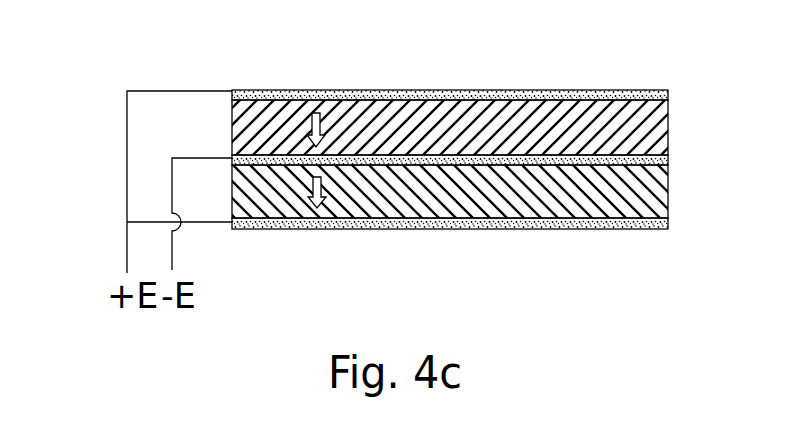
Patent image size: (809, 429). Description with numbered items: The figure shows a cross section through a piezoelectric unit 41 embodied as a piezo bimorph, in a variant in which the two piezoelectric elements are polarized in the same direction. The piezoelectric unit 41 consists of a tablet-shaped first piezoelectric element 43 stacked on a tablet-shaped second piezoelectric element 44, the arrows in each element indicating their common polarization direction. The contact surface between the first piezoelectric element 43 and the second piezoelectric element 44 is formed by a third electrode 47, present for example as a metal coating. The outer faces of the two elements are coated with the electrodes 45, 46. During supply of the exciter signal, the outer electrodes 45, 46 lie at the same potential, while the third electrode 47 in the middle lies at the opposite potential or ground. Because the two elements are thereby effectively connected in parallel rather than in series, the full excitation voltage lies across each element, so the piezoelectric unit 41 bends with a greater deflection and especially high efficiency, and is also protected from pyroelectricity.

The piezoelectric unit 41 is at (487, 183).
The first piezoelectric element 43 is at (668, 118).
The second piezoelectric element 44 is at (668, 187).
The electrode 45 is at (666, 91).
The electrode 46 is at (653, 223).
The third electrode 47 is at (668, 160).